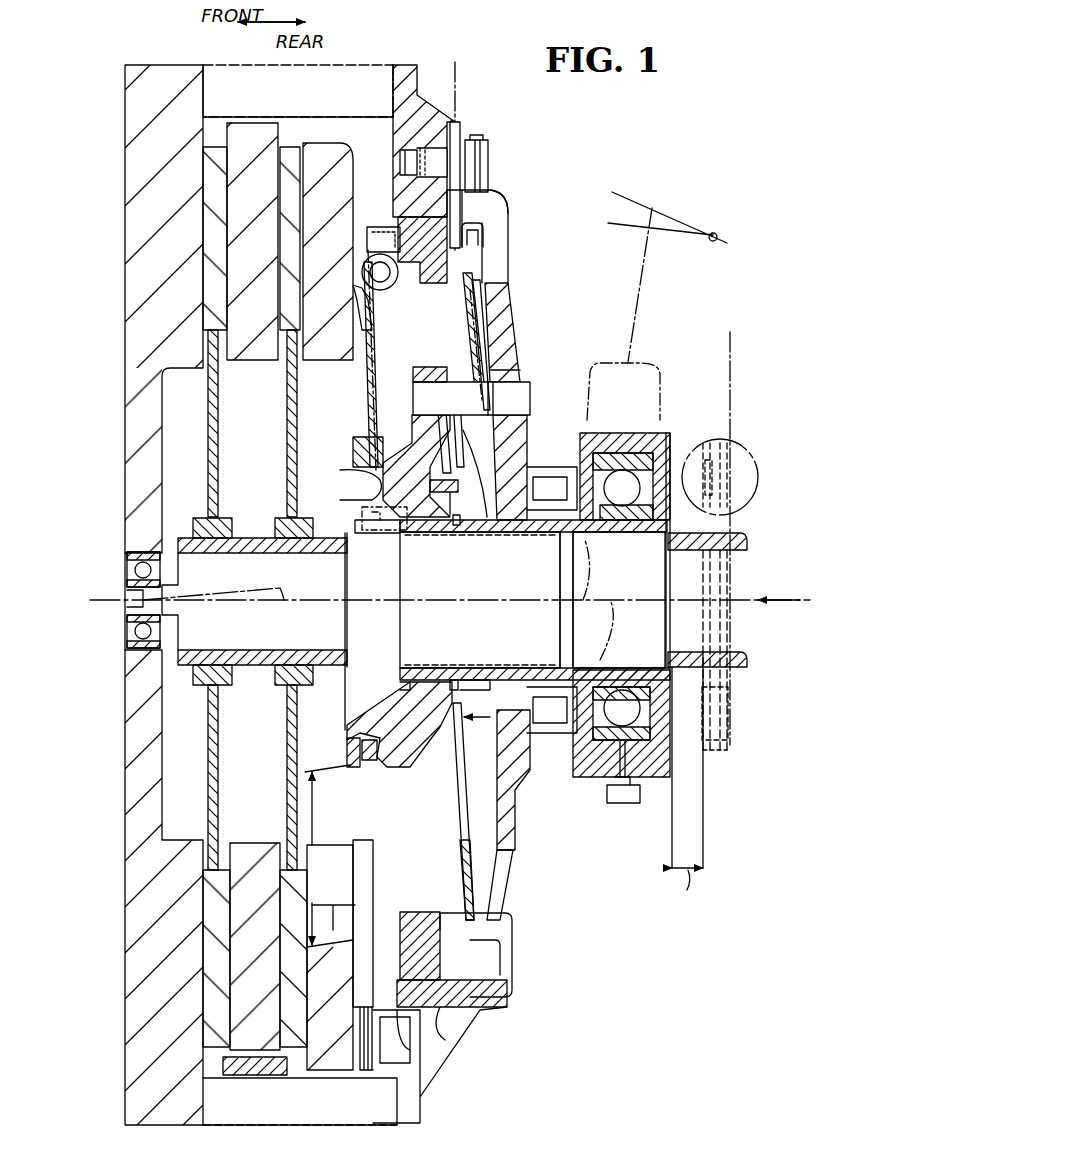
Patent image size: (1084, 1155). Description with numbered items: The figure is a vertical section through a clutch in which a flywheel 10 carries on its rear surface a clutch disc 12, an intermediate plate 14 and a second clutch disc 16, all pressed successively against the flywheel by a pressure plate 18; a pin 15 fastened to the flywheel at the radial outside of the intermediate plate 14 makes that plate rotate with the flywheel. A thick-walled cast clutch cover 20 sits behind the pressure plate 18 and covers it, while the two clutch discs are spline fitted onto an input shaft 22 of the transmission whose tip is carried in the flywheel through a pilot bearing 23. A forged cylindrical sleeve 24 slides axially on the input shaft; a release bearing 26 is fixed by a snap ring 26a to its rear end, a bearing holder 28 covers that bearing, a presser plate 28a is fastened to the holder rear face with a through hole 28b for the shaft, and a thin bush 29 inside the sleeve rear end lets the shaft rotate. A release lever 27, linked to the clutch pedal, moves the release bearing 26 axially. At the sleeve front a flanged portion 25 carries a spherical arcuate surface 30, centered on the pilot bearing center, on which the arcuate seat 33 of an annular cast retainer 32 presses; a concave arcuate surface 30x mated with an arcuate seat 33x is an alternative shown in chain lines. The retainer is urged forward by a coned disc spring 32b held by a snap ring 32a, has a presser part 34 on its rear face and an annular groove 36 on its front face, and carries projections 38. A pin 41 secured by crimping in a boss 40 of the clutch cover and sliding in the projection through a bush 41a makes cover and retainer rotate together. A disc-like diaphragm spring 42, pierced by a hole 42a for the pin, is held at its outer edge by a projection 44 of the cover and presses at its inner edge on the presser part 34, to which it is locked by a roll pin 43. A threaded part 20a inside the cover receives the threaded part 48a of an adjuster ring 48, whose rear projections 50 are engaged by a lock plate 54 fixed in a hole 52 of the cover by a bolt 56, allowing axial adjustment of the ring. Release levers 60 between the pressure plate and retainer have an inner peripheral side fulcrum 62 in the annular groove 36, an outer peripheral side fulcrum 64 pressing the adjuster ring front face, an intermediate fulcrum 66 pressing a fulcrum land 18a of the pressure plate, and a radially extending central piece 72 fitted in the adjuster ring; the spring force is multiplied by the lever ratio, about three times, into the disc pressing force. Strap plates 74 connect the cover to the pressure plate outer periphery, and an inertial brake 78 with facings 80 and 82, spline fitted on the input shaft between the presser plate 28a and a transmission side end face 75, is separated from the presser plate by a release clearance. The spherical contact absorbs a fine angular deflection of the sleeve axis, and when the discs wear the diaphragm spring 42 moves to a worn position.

The flywheel 10 is at (190, 65).
The clutch disc 12 is at (208, 417).
The intermediate plate 14 is at (240, 325).
The pin 15 is at (223, 1065).
The clutch disc 16 is at (287, 420).
The pressure plate 18 is at (313, 325).
The fulcrum land 18a is at (368, 295).
The clutch cover 20 is at (508, 223).
The threaded part 20a is at (470, 980).
The input shaft 22 is at (258, 685).
The pilot bearing 23 is at (132, 663).
The cylindrical sleeve 24 is at (540, 720).
The flanged portion 25 is at (390, 522).
The release bearing 26 is at (655, 755).
The snap ring 26a is at (684, 725).
The release lever 27 is at (563, 600).
The bearing holder 28 is at (660, 805).
The presser plate 28a is at (660, 775).
The through hole 28b is at (680, 683).
The thin bush 29 is at (672, 550).
The arcuate surface 30 is at (428, 668).
The concave arcuate surface 30x is at (380, 520).
The retainer 32 is at (345, 715).
The snap ring 32a is at (453, 682).
The coned disc spring 32b is at (470, 690).
The arcuate seat 33 is at (400, 688).
The arcuate seat 33x is at (380, 505).
The presser part 34 is at (458, 720).
The annular groove 36 is at (350, 748).
The projection 38 is at (427, 367).
The boss 40 is at (515, 373).
The pin 41 is at (505, 405).
The bush 41a is at (442, 370).
The diaphragm spring 42 is at (480, 905).
The hole 42a is at (505, 362).
The roll pin 43 is at (450, 495).
The projection 44 is at (500, 950).
The adjuster ring 48 is at (434, 957).
The threaded part 48a is at (440, 1010).
The projection 50 is at (484, 242).
The hole 52 is at (505, 198).
The lock plate 54 is at (455, 122).
The bolt 56 is at (480, 140).
The release lever 60 is at (362, 398).
The inner peripheral side fulcrum 62 is at (353, 460).
The outer peripheral side fulcrum 64 is at (422, 250).
The intermediate fulcrum 66 is at (357, 293).
The central piece 72 is at (405, 225).
The strap plate 74 is at (420, 1110).
The section line 75 is at (730, 340).
The inertial brake 78 is at (752, 450).
The facing 80 is at (730, 490).
The facing 82 is at (705, 470).